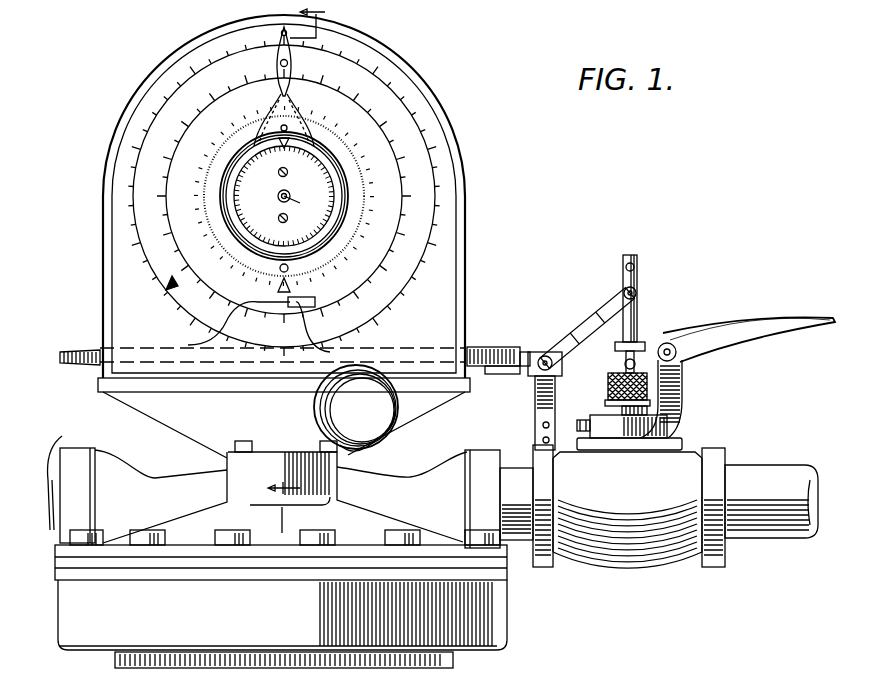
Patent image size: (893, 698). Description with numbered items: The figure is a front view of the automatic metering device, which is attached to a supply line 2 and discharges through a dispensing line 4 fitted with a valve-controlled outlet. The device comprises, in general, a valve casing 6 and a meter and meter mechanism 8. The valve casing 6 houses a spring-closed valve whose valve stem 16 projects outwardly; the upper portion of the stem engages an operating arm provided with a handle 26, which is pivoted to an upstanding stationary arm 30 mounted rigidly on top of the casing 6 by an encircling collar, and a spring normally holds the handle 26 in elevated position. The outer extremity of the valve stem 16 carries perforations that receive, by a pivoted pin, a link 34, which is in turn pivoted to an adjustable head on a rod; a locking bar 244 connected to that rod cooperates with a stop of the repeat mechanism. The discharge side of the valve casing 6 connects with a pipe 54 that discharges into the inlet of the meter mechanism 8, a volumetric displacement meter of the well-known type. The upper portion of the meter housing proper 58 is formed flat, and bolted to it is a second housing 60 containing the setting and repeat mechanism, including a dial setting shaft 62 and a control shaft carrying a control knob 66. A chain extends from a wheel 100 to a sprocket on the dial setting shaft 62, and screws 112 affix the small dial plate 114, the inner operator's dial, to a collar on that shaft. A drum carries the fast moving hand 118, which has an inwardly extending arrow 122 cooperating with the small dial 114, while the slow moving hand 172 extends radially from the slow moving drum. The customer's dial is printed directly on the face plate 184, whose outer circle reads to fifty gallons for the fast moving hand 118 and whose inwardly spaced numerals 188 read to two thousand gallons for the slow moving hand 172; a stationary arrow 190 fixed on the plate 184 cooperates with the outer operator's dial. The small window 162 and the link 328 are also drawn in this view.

The supply line 2 is at (771, 476).
The dispensing line 4 is at (193, 267).
The valve casing 6 is at (618, 568).
The meter and meter mechanism 8 is at (507, 612).
The valve stem 16 is at (637, 322).
The handle 26 is at (729, 326).
The upstanding stationary arm 30 is at (683, 391).
The link 34 is at (590, 328).
The pipe 54 is at (508, 478).
The meter housing proper 58 is at (230, 466).
The second housing 60 is at (334, 407).
The dial setting shaft 62 is at (290, 199).
The control knob 66 is at (378, 437).
The wheel 100 is at (245, 118).
The screws 112 is at (279, 175).
The small dial plate 114 is at (313, 172).
The fast moving hand 118 is at (313, 50).
The arrow 122 is at (300, 120).
The indicator window 162 is at (301, 302).
The slow moving hand 172 is at (258, 67).
The face plate 184 is at (450, 329).
The numerals 188 is at (172, 282).
The stationary arrow 190 is at (318, 313).
The locking bar 244 is at (80, 350).
The connecting link 328 is at (224, 327).